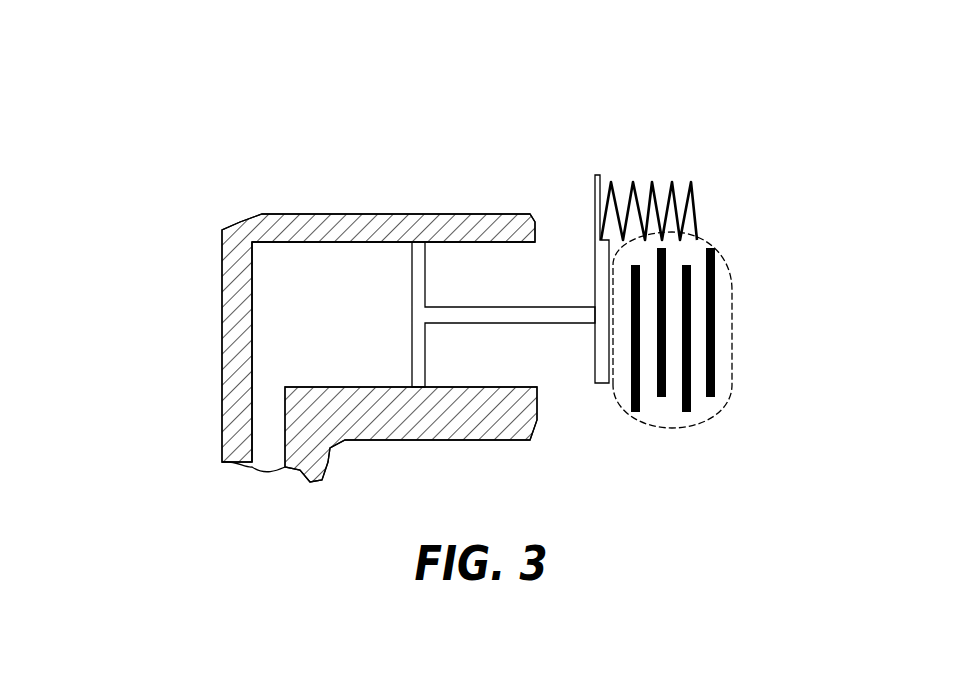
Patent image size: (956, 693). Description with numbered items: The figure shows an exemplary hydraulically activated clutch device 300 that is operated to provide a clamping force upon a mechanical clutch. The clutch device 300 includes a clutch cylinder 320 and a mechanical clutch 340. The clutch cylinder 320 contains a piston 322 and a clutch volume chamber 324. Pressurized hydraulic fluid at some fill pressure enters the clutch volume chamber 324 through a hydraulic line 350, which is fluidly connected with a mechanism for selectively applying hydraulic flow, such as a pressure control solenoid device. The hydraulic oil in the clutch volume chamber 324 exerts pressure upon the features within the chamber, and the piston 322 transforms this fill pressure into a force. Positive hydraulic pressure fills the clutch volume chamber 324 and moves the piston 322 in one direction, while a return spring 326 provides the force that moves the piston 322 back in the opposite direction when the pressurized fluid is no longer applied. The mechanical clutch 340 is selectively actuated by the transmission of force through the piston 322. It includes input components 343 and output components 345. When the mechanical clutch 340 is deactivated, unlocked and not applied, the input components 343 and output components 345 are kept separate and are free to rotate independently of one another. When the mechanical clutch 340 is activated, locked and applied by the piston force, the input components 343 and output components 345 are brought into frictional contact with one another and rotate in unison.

The clutch device 300 is at (230, 112).
The clutch cylinder 320 is at (300, 242).
The piston 322 is at (425, 285).
The clutch volume chamber 324 is at (276, 288).
The return spring 326 is at (652, 182).
The mechanical clutch 340 is at (727, 397).
The input components 343 is at (690, 402).
The output components 345 is at (665, 312).
The hydraulic line 350 is at (268, 430).